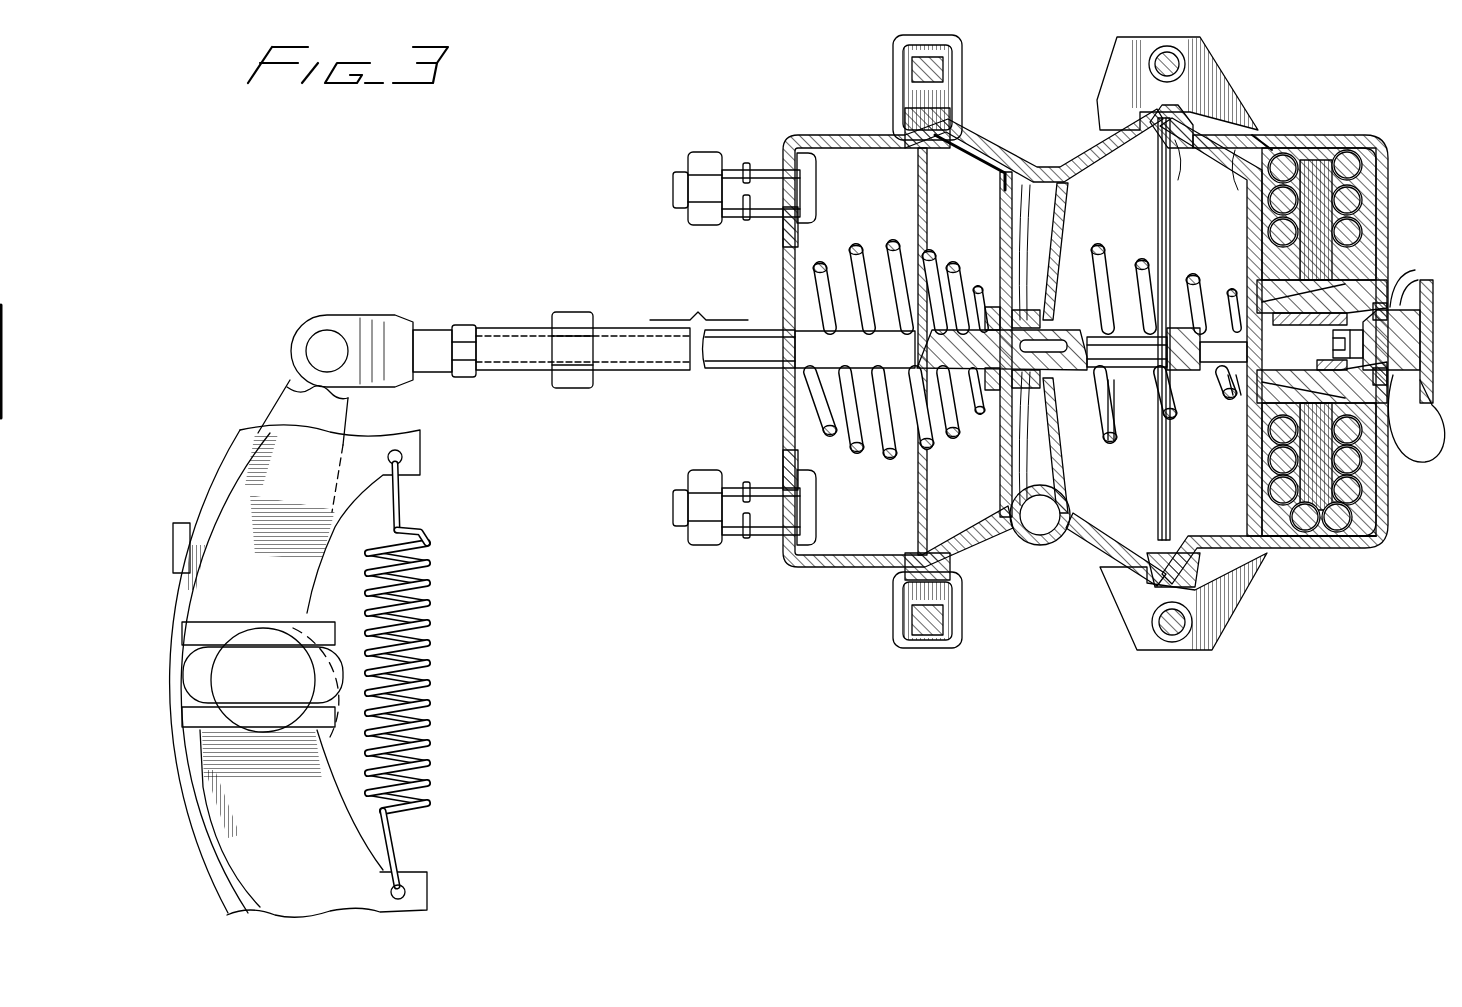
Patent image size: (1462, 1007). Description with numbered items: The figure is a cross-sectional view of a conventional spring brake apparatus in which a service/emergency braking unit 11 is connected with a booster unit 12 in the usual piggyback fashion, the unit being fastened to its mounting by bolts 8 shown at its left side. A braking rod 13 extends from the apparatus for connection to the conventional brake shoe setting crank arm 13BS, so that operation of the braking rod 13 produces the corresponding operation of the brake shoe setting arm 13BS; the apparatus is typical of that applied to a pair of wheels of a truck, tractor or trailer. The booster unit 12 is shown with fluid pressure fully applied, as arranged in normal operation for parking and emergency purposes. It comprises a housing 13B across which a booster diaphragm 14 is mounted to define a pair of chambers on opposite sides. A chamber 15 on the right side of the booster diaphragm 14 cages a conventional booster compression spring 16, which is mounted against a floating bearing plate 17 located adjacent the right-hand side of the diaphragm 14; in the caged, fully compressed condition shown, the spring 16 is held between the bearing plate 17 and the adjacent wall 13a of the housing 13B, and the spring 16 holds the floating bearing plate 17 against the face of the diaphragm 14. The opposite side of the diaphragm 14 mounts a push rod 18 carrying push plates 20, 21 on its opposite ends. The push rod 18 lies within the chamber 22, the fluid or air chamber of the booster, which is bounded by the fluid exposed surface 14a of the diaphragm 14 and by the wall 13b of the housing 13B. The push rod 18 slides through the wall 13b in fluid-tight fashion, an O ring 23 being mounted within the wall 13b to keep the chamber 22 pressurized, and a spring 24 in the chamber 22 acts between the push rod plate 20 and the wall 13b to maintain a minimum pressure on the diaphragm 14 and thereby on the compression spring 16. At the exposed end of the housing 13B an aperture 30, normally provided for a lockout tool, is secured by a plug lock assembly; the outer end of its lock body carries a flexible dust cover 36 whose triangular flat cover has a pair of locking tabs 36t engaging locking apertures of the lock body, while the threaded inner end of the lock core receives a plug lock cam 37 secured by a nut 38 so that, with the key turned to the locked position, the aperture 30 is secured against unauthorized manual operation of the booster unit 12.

The mounting bolts 8 is at (741, 147).
The service/emergency braking unit 11 is at (830, 590).
The booster unit 12 is at (1271, 365).
The braking rod 13 is at (518, 325).
The brake shoe setting crank arm 13BS is at (290, 378).
The wall of housing 13a is at (1374, 192).
The wall of housing 13b is at (1058, 547).
The housing 13B is at (1352, 555).
The booster diaphragm 14 is at (1250, 180).
The fluid exposed surface of the diaphragm 14a is at (1212, 163).
The chamber 15 is at (1243, 158).
The booster compression spring 16 is at (1372, 492).
The floating bearing plate 17 is at (1262, 158).
The push rod 18 is at (1127, 375).
The push plate 20 is at (1232, 415).
The push plate 21 is at (1023, 300).
The chamber 22 is at (1140, 210).
The O ring 23 is at (1052, 300).
The spring 24 is at (1110, 443).
The aperture 30 is at (1380, 232).
The flexible dust cover 36 is at (1420, 300).
The locking tabs 36t is at (1398, 288).
The plug lock cam 37 is at (1308, 362).
The nut 38 is at (1335, 360).